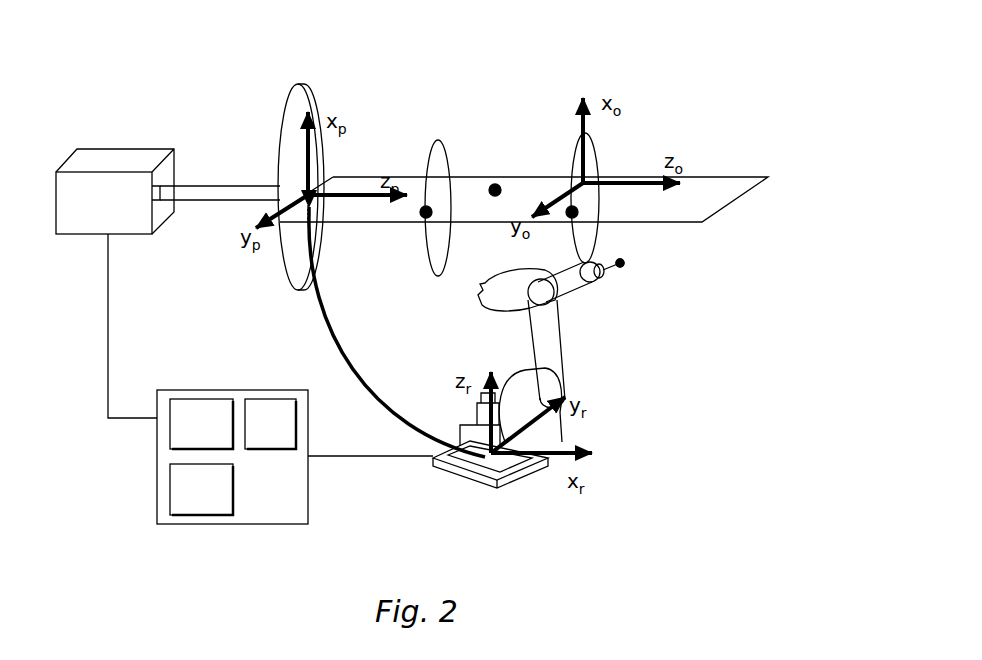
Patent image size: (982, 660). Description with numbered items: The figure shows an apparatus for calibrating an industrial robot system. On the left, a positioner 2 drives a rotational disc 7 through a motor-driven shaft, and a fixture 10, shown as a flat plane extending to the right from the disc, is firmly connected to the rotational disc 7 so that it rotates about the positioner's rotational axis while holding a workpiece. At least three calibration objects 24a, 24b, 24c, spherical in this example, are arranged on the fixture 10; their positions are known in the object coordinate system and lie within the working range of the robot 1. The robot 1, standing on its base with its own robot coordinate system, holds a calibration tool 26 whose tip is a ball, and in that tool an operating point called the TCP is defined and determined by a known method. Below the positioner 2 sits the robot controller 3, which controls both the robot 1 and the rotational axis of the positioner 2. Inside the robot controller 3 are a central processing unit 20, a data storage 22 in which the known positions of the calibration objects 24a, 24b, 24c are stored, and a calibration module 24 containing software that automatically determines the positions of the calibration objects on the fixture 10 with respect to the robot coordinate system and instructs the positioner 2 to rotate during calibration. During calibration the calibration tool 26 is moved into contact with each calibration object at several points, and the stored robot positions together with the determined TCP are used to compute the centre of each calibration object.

The robot 1 is at (552, 333).
The positioner 2 is at (112, 122).
The robot controller 3 is at (255, 455).
The rotational disc 7 is at (309, 97).
The fixture 10 is at (712, 196).
The central processing unit (CPU) 20 is at (201, 403).
The data storage 22 is at (265, 403).
The calibration module 24 is at (198, 500).
The calibration object 24a is at (425, 222).
The calibration object 24b is at (495, 183).
The calibration object 24c is at (580, 216).
The calibration tool 26 is at (607, 277).
The tool centre point TCP is at (628, 262).